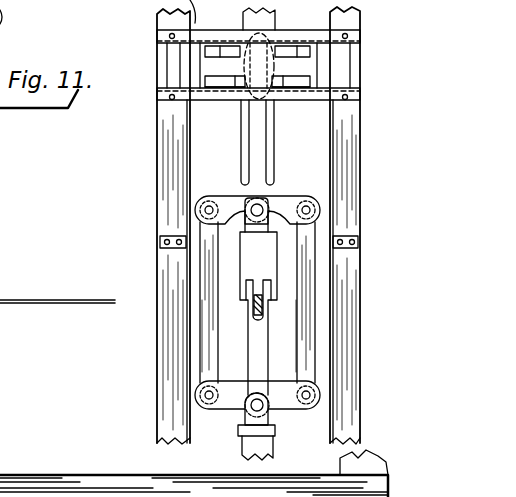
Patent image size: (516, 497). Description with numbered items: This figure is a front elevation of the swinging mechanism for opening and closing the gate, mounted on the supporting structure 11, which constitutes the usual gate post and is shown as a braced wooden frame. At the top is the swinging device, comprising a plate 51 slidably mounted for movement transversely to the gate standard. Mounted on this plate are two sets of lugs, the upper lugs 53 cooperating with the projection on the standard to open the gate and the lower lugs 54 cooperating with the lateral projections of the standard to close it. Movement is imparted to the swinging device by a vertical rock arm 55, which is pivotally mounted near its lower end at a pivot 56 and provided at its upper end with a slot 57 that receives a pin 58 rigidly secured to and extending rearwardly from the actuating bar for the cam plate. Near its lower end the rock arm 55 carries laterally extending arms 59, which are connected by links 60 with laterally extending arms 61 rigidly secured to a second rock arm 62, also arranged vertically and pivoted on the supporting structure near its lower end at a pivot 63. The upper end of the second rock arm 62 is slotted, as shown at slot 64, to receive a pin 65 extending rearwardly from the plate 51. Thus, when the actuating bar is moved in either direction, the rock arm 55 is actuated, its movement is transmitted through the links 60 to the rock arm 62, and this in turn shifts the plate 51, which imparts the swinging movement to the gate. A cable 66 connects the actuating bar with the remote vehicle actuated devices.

The supporting structure 11 is at (167, 170).
The plate 51 is at (208, 62).
The upper lugs 53 is at (213, 46).
The lower lugs 54 is at (215, 90).
The rock arm 55 is at (250, 393).
The pivot 56 is at (267, 414).
The slot 57 is at (262, 312).
The pin 58 is at (253, 281).
The laterally extending arms 59 is at (280, 385).
The links 60 is at (208, 312).
The laterally extending arms 61 is at (217, 196).
The second rock arm 62 is at (266, 128).
The pivot 63 is at (250, 197).
The slot 64 is at (248, 90).
The pin 65 is at (317, 0).
The cable 66 is at (28, 300).